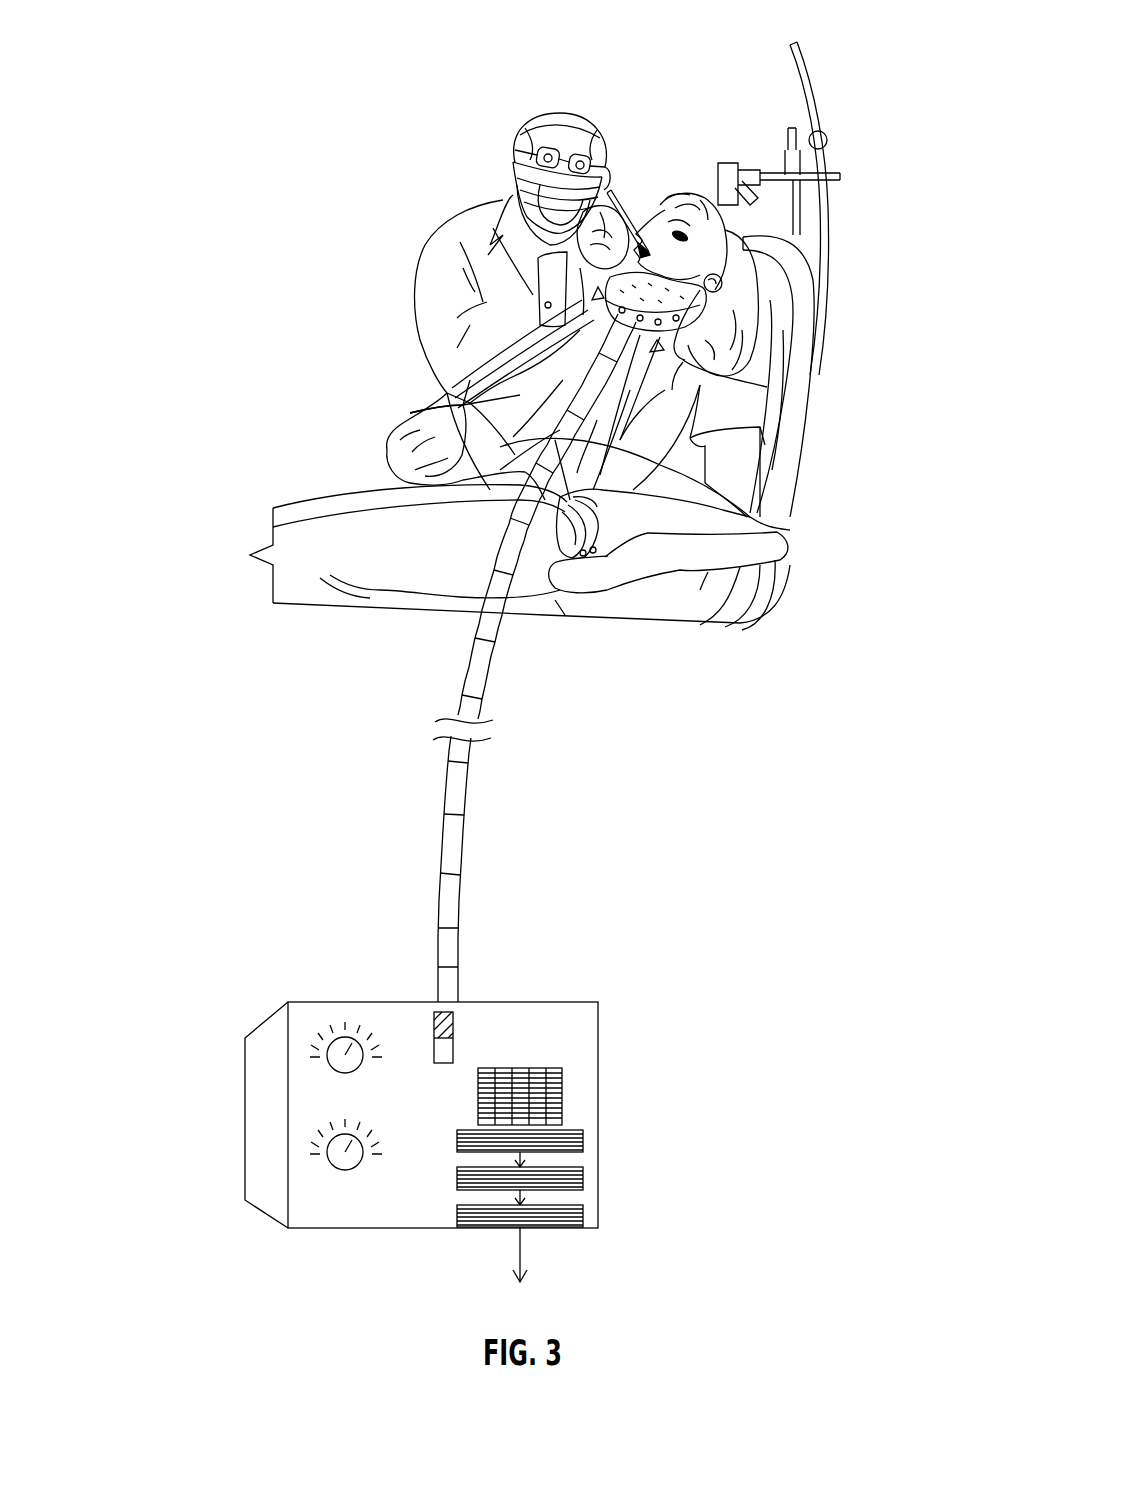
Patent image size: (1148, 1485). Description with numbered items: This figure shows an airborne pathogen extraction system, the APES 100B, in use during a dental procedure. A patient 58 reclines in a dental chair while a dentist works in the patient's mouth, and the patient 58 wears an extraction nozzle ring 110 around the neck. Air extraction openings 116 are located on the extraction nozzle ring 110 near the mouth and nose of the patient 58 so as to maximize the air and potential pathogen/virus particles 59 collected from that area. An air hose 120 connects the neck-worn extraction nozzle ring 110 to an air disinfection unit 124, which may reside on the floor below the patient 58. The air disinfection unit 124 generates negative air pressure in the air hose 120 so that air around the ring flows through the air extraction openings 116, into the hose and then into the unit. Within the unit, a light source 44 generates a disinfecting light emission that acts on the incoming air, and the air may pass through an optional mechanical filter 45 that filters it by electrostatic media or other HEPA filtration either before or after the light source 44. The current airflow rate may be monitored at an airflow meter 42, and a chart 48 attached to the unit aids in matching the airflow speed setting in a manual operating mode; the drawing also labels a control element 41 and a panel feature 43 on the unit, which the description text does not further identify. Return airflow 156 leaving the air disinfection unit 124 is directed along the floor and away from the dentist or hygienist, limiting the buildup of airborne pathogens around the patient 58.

The APES 100B is at (212, 66).
The patient 58 is at (757, 390).
The pathogen/virus particles 59 is at (600, 300).
The air extraction openings 116 is at (470, 393).
The extraction nozzle ring 110 is at (447, 454).
The air hose 120 is at (790, 530).
The air disinfection unit 124 is at (632, 965).
The light source 44 is at (580, 1070).
The first control knob 41 is at (337, 1018).
The airflow meter 42 is at (345, 1170).
The control panel 43 is at (412, 1185).
The mechanical filter 45 is at (455, 1025).
The chart 48 is at (563, 1098).
The return airflow 156 is at (522, 1245).